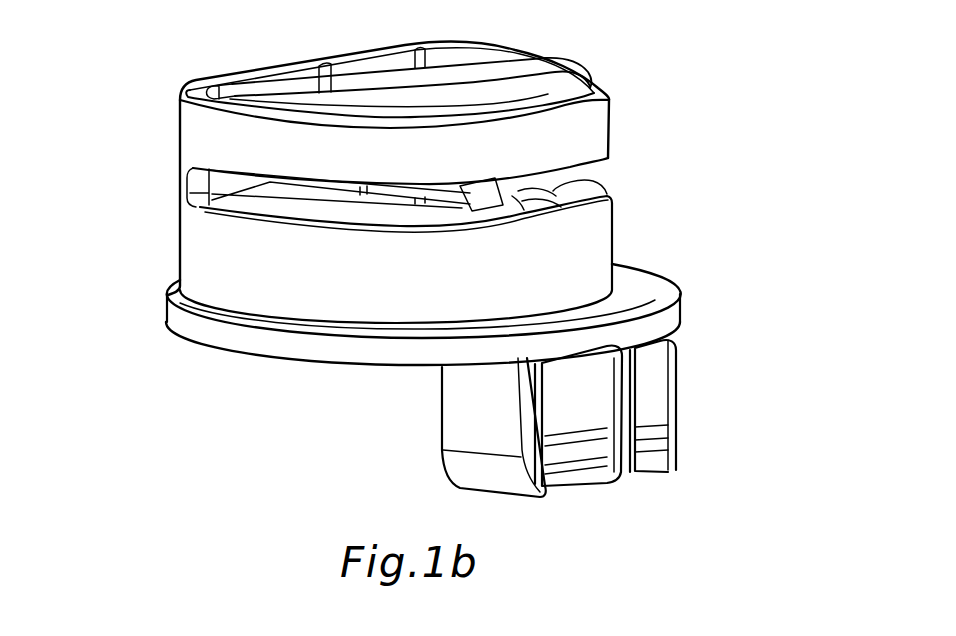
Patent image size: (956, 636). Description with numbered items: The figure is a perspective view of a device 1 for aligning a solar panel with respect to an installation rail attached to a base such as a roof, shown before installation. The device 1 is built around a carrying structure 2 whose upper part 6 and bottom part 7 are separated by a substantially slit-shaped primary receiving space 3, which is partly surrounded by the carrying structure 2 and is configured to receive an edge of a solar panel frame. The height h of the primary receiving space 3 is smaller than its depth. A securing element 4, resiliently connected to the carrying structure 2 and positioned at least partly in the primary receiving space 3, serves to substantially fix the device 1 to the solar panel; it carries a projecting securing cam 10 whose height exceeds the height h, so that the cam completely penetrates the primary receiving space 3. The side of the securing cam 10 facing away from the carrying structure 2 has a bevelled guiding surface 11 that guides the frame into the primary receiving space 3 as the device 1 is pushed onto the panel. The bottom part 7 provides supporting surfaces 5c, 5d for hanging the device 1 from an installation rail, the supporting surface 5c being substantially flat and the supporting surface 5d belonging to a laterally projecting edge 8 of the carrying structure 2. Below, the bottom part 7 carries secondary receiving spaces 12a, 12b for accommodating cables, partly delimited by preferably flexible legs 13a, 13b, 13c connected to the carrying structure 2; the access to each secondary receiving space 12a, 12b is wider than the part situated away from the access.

The device 1 is at (731, 133).
The carrying structure 2 is at (152, 170).
The primary receiving space 3 is at (584, 201).
The securing element 4 is at (541, 192).
The supporting surface 5c is at (249, 282).
The supporting surface 5d is at (245, 349).
The upper part 6 is at (354, 163).
The bottom part 7 is at (152, 210).
The laterally projecting edge 8 is at (444, 346).
The securing cam 10 is at (467, 186).
The bevelled guiding surface 11 is at (521, 188).
The secondary receiving space 12a is at (591, 430).
The secondary receiving space 12b is at (652, 398).
The leg 13a is at (546, 488).
The leg 13b is at (627, 474).
The leg 13c is at (669, 464).
The height of the primary receiving space h is at (612, 157).